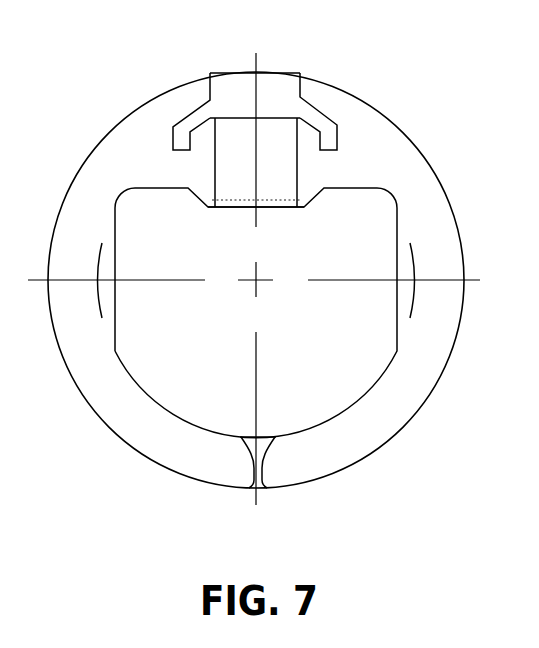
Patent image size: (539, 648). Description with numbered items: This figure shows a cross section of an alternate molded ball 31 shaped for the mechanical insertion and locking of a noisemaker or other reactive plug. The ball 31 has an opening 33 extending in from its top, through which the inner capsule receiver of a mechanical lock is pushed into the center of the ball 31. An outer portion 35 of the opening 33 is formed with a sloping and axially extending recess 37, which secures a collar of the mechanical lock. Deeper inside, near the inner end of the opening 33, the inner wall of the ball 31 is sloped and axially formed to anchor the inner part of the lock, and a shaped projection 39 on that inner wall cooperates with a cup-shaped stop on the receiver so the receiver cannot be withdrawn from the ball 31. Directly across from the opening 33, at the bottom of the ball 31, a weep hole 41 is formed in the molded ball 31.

The ball 31 is at (446, 162).
The opening 33 is at (217, 175).
The outer portion 35 is at (298, 94).
The sloping and axially extending recess 37 is at (208, 103).
The shaped projection 39 is at (313, 194).
The weep hole 41 is at (263, 439).